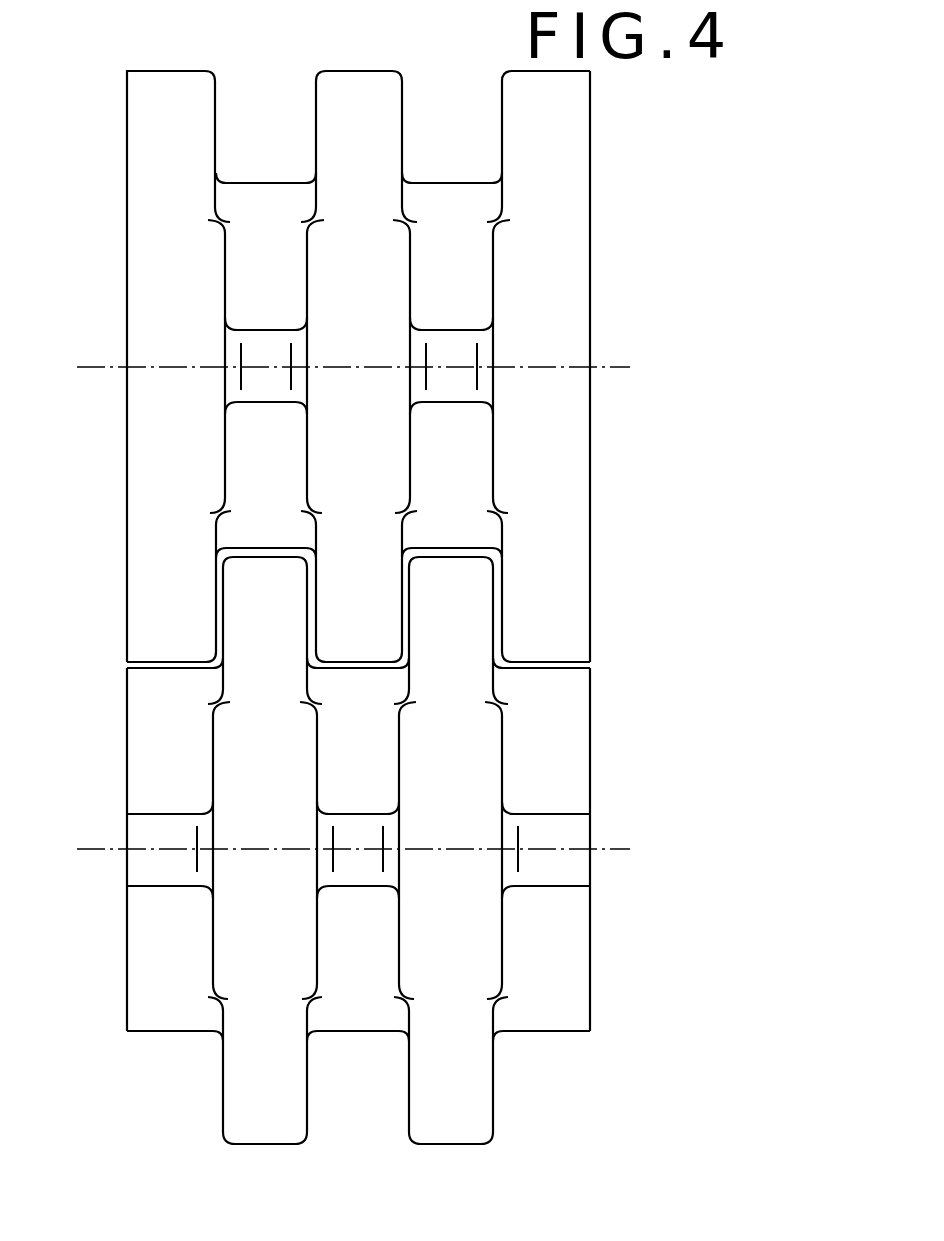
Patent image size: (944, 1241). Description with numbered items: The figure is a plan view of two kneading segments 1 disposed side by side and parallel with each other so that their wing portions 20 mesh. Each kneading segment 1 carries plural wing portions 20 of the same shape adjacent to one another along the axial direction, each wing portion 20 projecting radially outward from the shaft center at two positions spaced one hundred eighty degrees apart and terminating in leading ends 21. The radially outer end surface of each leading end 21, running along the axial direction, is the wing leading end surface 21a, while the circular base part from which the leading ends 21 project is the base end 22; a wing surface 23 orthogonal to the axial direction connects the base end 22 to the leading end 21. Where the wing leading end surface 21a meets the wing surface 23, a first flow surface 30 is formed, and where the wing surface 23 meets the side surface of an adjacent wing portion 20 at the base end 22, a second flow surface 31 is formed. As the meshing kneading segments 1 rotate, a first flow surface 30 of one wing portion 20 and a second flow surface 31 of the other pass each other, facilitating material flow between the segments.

The kneading segment 1 is at (94, 175).
The wing portion 20 is at (213, 401).
The leading end 21 is at (118, 83).
The wing leading end surface 21a is at (355, 70).
The base end 22 is at (525, 206).
The wing surface 23 is at (317, 132).
The first flow surface 30 is at (320, 73).
The second flow surface 31 is at (305, 212).